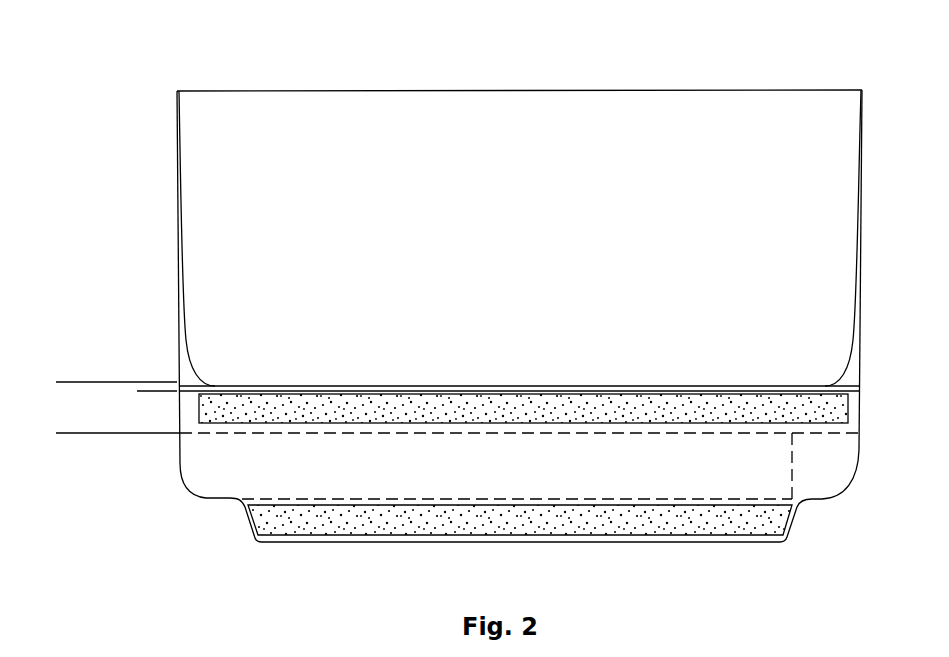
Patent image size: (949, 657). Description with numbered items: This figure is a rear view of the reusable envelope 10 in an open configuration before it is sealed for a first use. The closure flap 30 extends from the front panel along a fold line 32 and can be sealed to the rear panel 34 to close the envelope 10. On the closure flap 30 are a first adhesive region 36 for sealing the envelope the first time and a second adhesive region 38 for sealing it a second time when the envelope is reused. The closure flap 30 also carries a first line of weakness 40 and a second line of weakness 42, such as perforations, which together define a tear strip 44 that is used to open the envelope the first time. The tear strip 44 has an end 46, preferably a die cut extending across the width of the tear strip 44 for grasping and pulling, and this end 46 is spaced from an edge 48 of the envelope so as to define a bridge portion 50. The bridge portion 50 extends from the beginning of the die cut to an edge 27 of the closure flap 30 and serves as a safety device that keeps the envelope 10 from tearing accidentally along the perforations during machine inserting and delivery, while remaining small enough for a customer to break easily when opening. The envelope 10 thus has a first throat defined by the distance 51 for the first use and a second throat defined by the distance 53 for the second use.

The envelope 10 is at (846, 70).
The edge of the flap 27 is at (793, 537).
The closure flap 30 is at (197, 497).
The fold line 32 is at (832, 386).
The rear panel 34 is at (806, 134).
The first adhesive region 36 is at (838, 408).
The second adhesive region 38 is at (740, 535).
The first line of weakness 40 is at (833, 433).
The second line of weakness 42 is at (328, 498).
The tear strip 44 is at (521, 479).
The end of the tear strip 46 is at (790, 458).
The edge of the envelope 48 is at (843, 482).
The bridge portion 50 is at (797, 505).
The first throat distance 51 is at (72, 382).
The second throat distance 53 is at (159, 423).